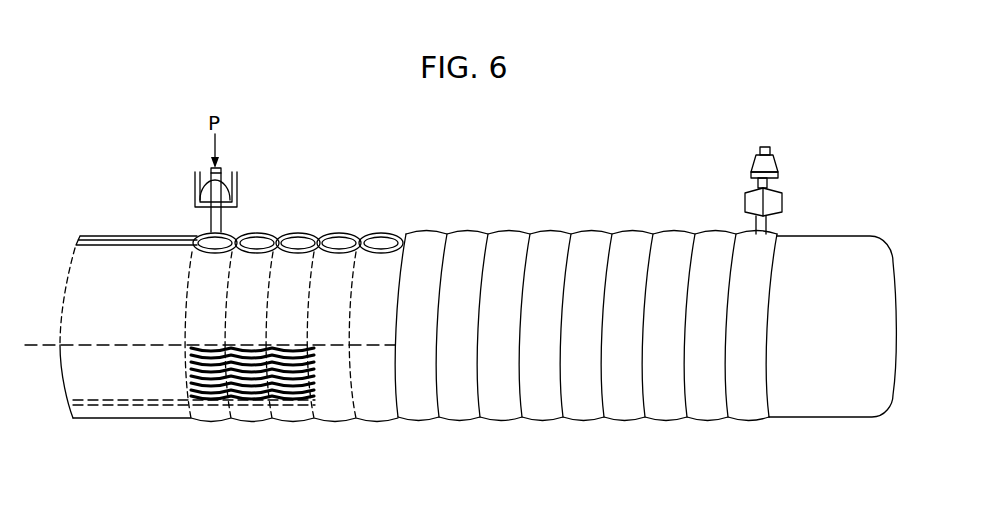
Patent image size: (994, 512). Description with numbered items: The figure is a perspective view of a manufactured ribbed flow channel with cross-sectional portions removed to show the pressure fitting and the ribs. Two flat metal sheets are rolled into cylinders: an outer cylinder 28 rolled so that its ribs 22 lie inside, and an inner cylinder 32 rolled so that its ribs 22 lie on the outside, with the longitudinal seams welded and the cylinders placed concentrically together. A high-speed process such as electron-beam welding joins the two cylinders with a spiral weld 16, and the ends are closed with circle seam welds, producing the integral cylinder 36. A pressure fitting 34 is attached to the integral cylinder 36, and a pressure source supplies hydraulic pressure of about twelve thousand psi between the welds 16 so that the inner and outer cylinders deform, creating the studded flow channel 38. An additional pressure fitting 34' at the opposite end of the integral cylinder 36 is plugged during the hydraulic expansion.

The spiral weld 16 is at (438, 421).
The ribs 22 is at (191, 364).
The cylinder 28 is at (127, 235).
The cylinder 32 is at (172, 248).
The pressure fitting 34 is at (235, 197).
The pressure fitting 34' is at (781, 172).
The integral cylinder 36 is at (455, 215).
The studded flow channel 38 is at (343, 240).